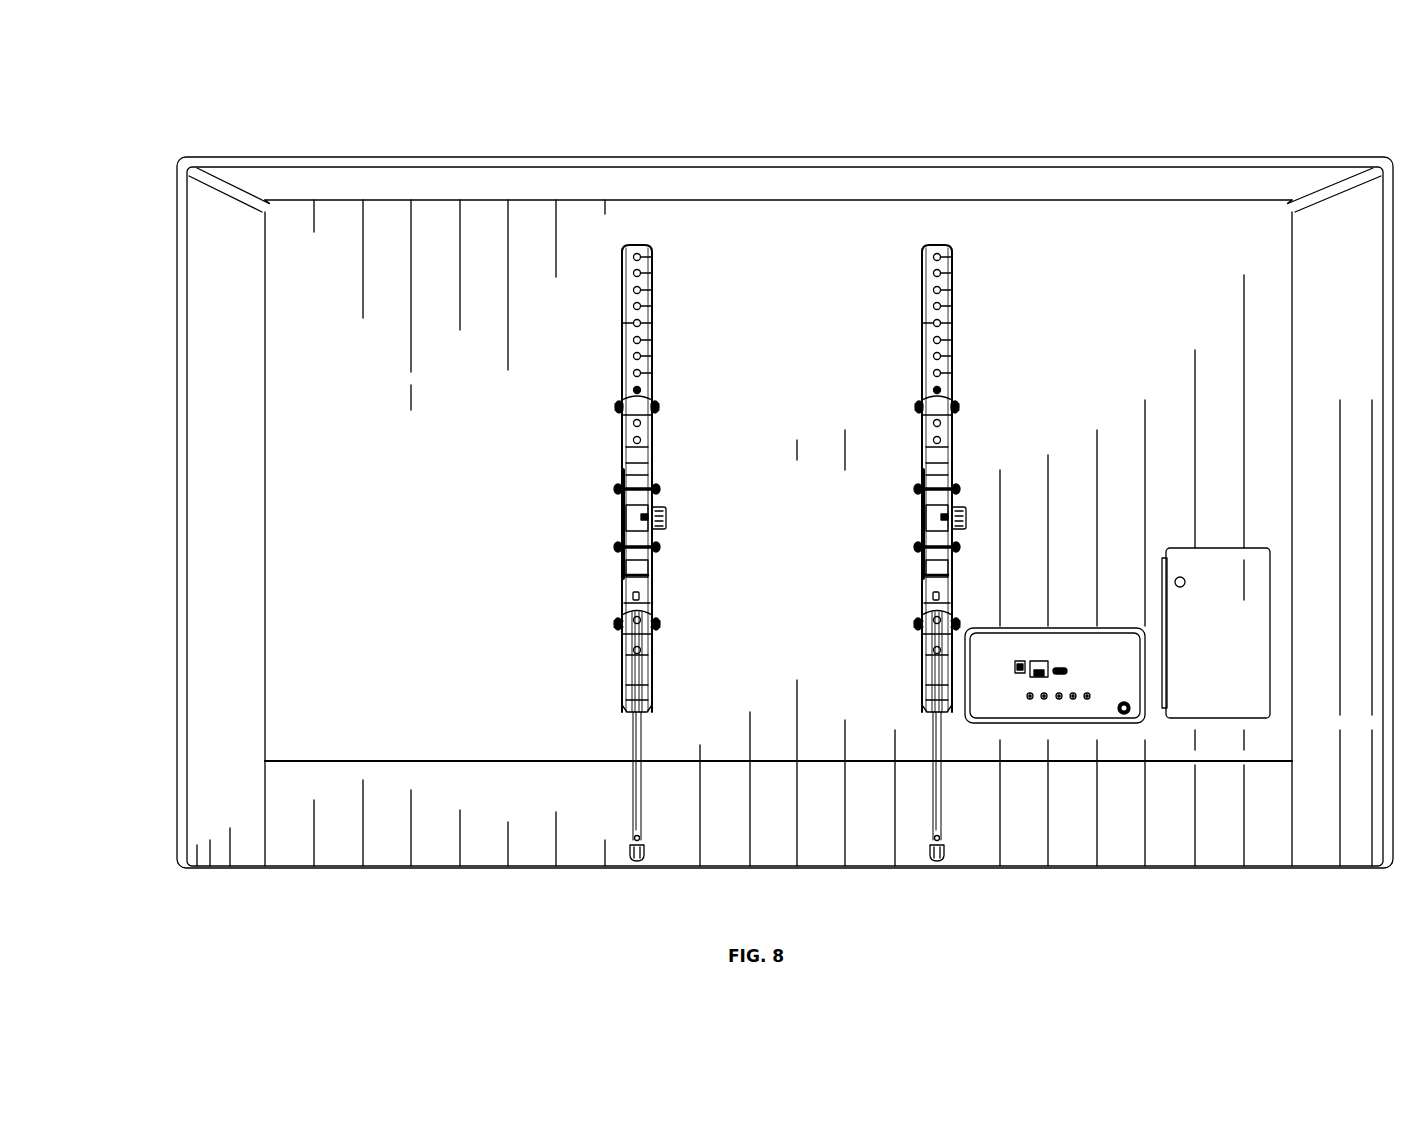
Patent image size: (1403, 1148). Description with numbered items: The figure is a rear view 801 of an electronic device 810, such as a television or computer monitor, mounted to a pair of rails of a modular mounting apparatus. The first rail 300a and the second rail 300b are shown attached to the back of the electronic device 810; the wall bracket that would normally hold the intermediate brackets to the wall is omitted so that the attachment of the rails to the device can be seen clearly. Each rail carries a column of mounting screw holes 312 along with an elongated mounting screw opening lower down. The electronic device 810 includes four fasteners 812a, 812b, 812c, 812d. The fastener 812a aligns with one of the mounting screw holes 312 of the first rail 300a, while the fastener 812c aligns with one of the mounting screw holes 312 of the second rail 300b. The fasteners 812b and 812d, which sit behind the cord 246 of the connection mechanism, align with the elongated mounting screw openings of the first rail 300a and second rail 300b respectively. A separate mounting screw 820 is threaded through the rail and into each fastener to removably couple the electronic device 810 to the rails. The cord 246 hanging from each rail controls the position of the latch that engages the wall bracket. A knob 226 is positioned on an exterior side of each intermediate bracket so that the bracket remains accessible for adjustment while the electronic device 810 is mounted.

The rear view 801 is at (310, 116).
The electronic device 810 is at (775, 157).
The first rail 300a is at (622, 301).
The second rail 300b is at (953, 329).
The mounting screw holes 312 is at (628, 376).
The mounting screw 820 is at (631, 393).
The fastener 812a is at (643, 391).
The fastener 812b is at (658, 656).
The fastener 812c is at (929, 391).
The fastener 812d is at (916, 656).
The knob 226 is at (669, 519).
The cord 246 is at (643, 791).